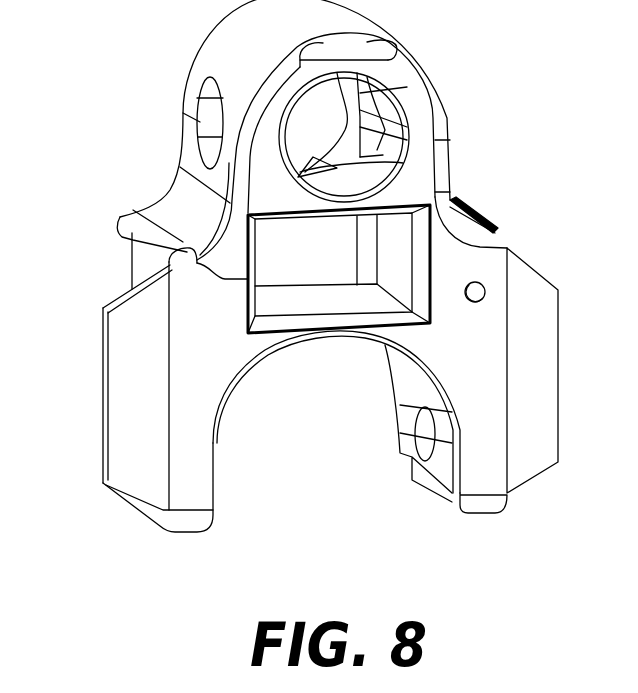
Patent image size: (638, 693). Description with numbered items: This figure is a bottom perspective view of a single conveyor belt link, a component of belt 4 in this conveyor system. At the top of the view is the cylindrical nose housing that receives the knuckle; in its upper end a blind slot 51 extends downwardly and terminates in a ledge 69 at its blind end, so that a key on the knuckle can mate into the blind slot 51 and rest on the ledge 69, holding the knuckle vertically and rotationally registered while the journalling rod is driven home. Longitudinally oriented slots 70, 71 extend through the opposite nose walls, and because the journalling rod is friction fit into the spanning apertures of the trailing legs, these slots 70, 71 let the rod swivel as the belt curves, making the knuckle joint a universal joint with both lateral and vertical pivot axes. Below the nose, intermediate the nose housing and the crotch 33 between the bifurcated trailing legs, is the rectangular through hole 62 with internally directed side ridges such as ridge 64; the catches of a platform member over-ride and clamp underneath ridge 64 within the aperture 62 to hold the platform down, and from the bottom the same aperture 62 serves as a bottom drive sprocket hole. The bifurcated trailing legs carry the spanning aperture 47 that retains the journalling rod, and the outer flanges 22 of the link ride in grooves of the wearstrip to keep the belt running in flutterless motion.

The mounting hole 4 is at (476, 283).
The flange 22 is at (133, 420).
The crotch 33 is at (347, 340).
The spanning aperture 47 is at (423, 437).
The blind slot 51 is at (298, 158).
The rectangular through hole 62 is at (286, 265).
The side ridge 64 is at (352, 240).
The ledge 69 is at (420, 168).
The slot 70 is at (210, 120).
The slot 71 is at (400, 97).